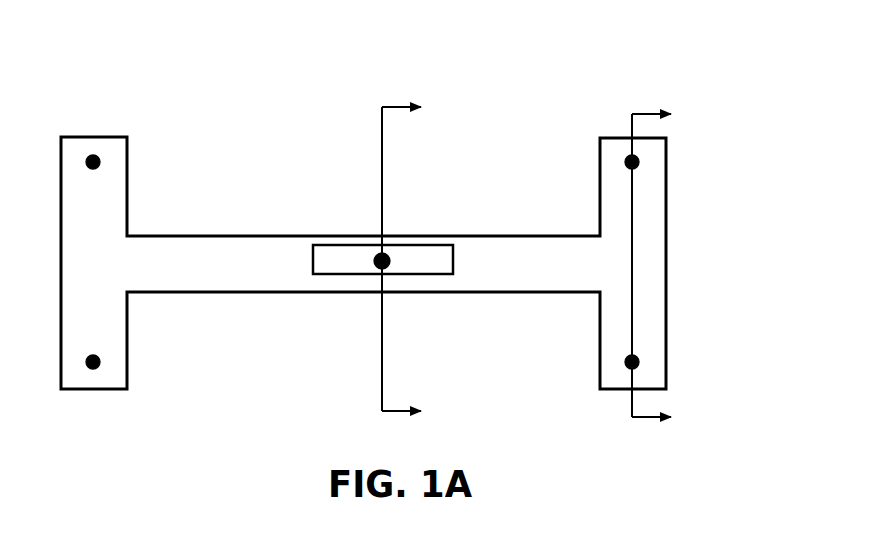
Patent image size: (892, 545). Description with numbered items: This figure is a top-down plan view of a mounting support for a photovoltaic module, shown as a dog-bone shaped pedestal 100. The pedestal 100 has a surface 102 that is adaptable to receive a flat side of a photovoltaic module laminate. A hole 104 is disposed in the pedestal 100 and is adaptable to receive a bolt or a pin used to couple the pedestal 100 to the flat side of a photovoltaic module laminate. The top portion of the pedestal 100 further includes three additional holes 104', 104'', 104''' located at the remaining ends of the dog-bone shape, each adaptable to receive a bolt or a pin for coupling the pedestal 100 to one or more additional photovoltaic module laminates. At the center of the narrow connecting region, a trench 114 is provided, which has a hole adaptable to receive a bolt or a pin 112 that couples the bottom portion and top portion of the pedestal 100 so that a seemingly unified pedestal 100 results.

The pedestal 100 is at (586, 66).
The surface 102 is at (204, 273).
The hole 104 is at (680, 355).
The additional hole 104' is at (683, 163).
The additional hole 104'' is at (90, 125).
The additional hole 104''' is at (126, 391).
The bolt or pin 112 is at (389, 257).
The trench 114 is at (433, 265).